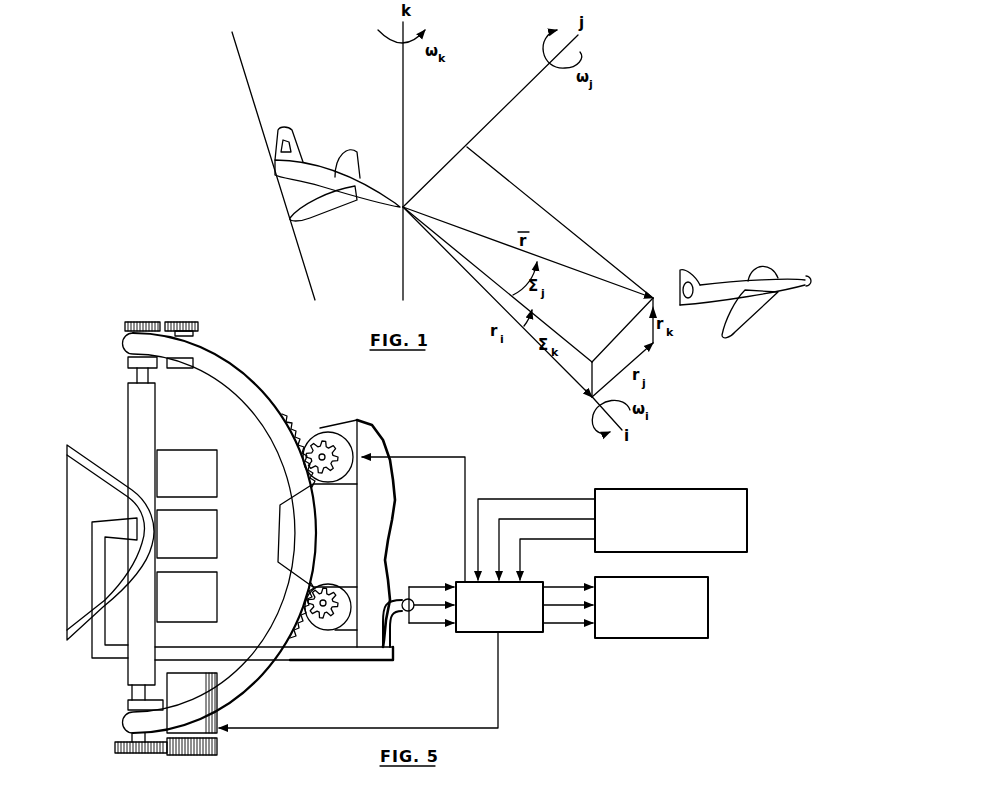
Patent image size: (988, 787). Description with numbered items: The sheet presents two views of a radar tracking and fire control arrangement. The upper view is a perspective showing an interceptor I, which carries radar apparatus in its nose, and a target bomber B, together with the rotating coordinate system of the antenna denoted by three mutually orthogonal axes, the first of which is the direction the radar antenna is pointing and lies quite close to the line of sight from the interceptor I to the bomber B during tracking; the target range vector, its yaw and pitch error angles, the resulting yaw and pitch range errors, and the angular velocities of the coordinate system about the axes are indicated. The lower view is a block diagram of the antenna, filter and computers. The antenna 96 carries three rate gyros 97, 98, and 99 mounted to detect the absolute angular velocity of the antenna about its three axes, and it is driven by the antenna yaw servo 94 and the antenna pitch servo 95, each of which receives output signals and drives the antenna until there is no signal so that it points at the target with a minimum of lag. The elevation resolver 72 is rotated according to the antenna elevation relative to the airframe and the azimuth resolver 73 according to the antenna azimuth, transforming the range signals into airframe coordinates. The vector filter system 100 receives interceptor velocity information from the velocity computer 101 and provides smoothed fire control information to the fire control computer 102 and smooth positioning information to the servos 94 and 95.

In FIG. 1, the interceptor I is at (302, 175).
In FIG. 1, the target bomber B is at (742, 283).
In FIG. 5, the elevation resolver 72 is at (328, 620).
In FIG. 5, the azimuth resolver 73 is at (196, 337).
In FIG. 5, the antenna yaw servo 94 is at (219, 737).
In FIG. 5, the antenna pitch servo 95 is at (311, 438).
In FIG. 5, the antenna 96 is at (108, 381).
In FIG. 5, the rate gyro 97 is at (215, 450).
In FIG. 5, the rate gyro 98 is at (212, 516).
In FIG. 5, the rate gyro 99 is at (212, 579).
In FIG. 5, the vector filter system 100 is at (530, 636).
In FIG. 5, the velocity computer 101 is at (703, 492).
In FIG. 5, the fire control computer 102 is at (685, 640).